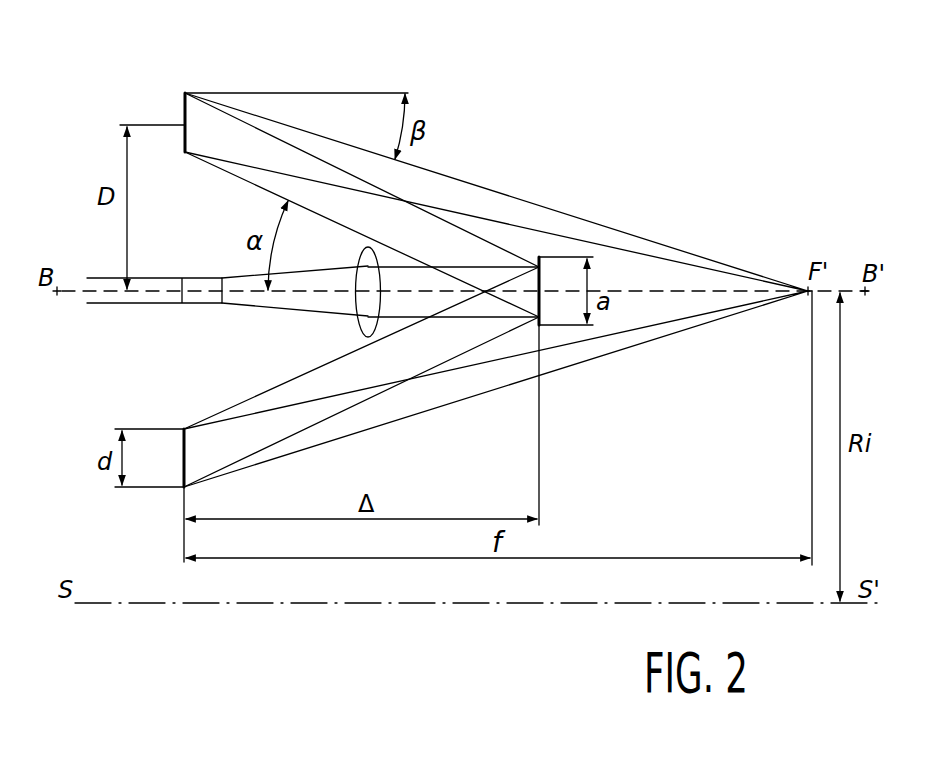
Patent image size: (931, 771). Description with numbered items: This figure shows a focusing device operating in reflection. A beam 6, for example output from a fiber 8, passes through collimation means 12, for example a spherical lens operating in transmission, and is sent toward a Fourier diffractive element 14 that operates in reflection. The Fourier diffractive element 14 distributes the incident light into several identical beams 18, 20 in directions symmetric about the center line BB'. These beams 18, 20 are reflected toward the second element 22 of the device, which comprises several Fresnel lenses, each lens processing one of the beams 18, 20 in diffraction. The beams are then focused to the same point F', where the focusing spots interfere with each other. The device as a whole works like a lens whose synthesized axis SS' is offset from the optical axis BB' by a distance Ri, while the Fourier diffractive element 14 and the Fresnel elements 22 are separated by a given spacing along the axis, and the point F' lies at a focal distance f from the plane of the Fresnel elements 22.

The beam 6 is at (296, 307).
The fiber 8 is at (128, 306).
The collimation means 12 is at (362, 256).
The Fourier diffractive element 14 is at (546, 258).
The beam 18 is at (271, 183).
The beam 20 is at (245, 408).
The second element 22 is at (186, 88).